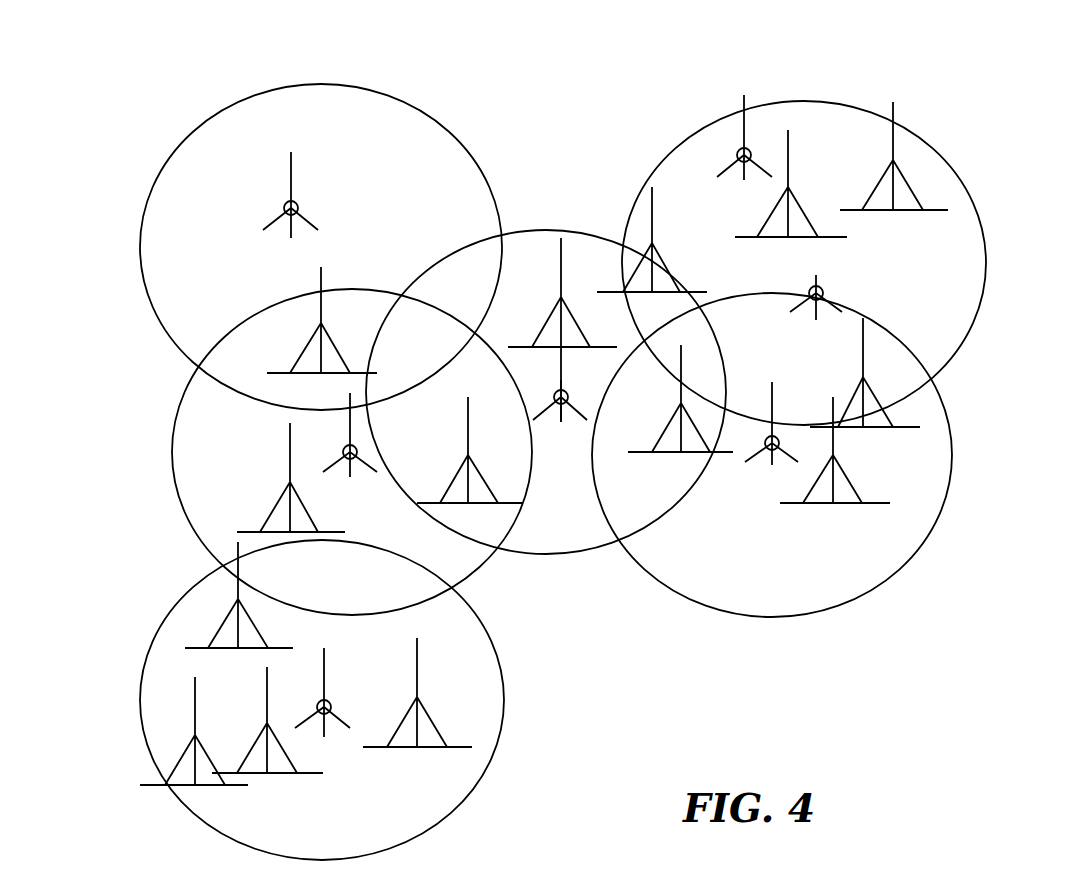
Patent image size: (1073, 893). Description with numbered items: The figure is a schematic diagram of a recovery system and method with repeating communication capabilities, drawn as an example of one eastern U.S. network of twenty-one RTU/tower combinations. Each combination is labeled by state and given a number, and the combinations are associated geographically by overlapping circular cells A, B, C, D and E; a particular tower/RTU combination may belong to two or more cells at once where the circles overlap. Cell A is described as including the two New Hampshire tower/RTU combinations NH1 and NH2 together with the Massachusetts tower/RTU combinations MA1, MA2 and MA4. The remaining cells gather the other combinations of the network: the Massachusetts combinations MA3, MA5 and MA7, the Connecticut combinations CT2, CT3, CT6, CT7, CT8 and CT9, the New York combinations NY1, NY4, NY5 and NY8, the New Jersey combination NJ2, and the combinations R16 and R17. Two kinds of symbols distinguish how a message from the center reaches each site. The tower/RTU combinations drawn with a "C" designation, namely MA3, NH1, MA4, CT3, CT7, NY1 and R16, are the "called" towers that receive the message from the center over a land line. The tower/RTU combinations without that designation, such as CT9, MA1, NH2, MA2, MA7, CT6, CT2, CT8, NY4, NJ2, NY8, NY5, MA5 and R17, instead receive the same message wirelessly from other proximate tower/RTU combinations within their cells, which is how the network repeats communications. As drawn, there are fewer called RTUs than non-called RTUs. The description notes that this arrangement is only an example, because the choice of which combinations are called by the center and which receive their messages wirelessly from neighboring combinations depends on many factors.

The cell A is at (953, 468).
The cell B is at (987, 270).
The cell C is at (328, 86).
The cell D is at (172, 468).
The cell E is at (503, 712).
The tower/RTU combination CT9 is at (322, 334).
The tower/RTU combination MA1 is at (791, 199).
The tower/RTU combination NH2 is at (894, 172).
The tower/RTU combination MA2 is at (652, 254).
The tower/RTU combination MA7 is at (562, 330).
The tower/RTU combination CT6 is at (470, 464).
The tower/RTU combination CT2 is at (680, 415).
The tower/RTU combination CT8 is at (291, 492).
The tower/RTU combination NY4 is at (239, 611).
The tower/RTU combination NJ2 is at (194, 746).
The tower/RTU combination NY8 is at (267, 735).
The tower/RTU combination NY5 is at (417, 707).
The tower/RTU combination MA5 is at (865, 386).
The tower/RTU combination R17 is at (835, 466).
The called tower/RTU combination MA3 is at (290, 208).
The called tower/RTU combination NH1 is at (744, 154).
The called tower/RTU combination MA4 is at (816, 312).
The called tower/RTU combination CT3 is at (560, 417).
The called tower/RTU combination CT7 is at (350, 450).
The called tower/RTU combination NY1 is at (322, 706).
The called tower/RTU combination R16 is at (771, 440).